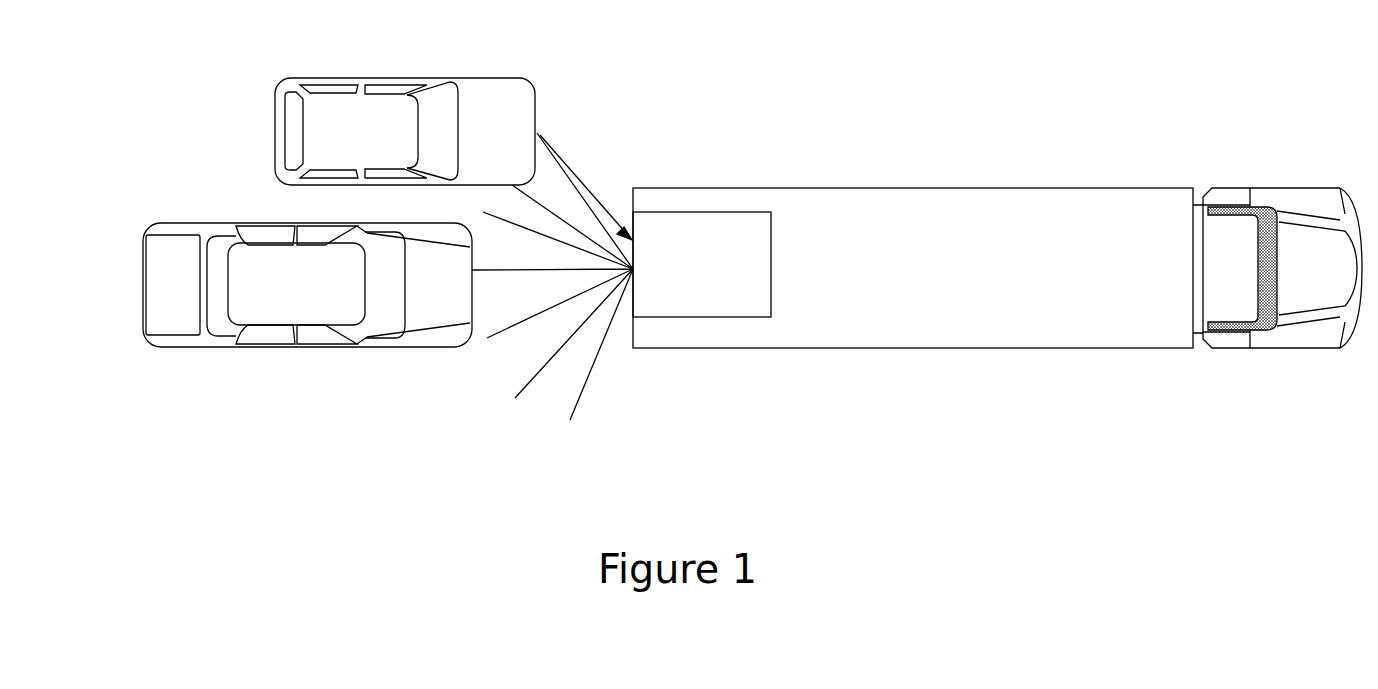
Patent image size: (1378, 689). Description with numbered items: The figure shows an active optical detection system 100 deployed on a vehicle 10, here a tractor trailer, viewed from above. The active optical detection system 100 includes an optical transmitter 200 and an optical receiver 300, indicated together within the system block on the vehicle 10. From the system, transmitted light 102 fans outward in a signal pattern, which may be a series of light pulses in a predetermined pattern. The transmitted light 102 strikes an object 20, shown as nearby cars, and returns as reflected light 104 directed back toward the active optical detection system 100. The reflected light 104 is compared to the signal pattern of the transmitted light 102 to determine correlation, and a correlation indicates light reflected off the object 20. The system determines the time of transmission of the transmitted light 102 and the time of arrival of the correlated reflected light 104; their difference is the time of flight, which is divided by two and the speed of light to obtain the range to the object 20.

The vehicle 10 is at (970, 190).
The object 20 is at (330, 77).
The active optical detection system 100 is at (710, 212).
The transmitted light 102 is at (577, 405).
The reflected light 104 is at (590, 192).
The optical transmitter 200 is at (702, 264).
The optical receiver 300 is at (667, 310).